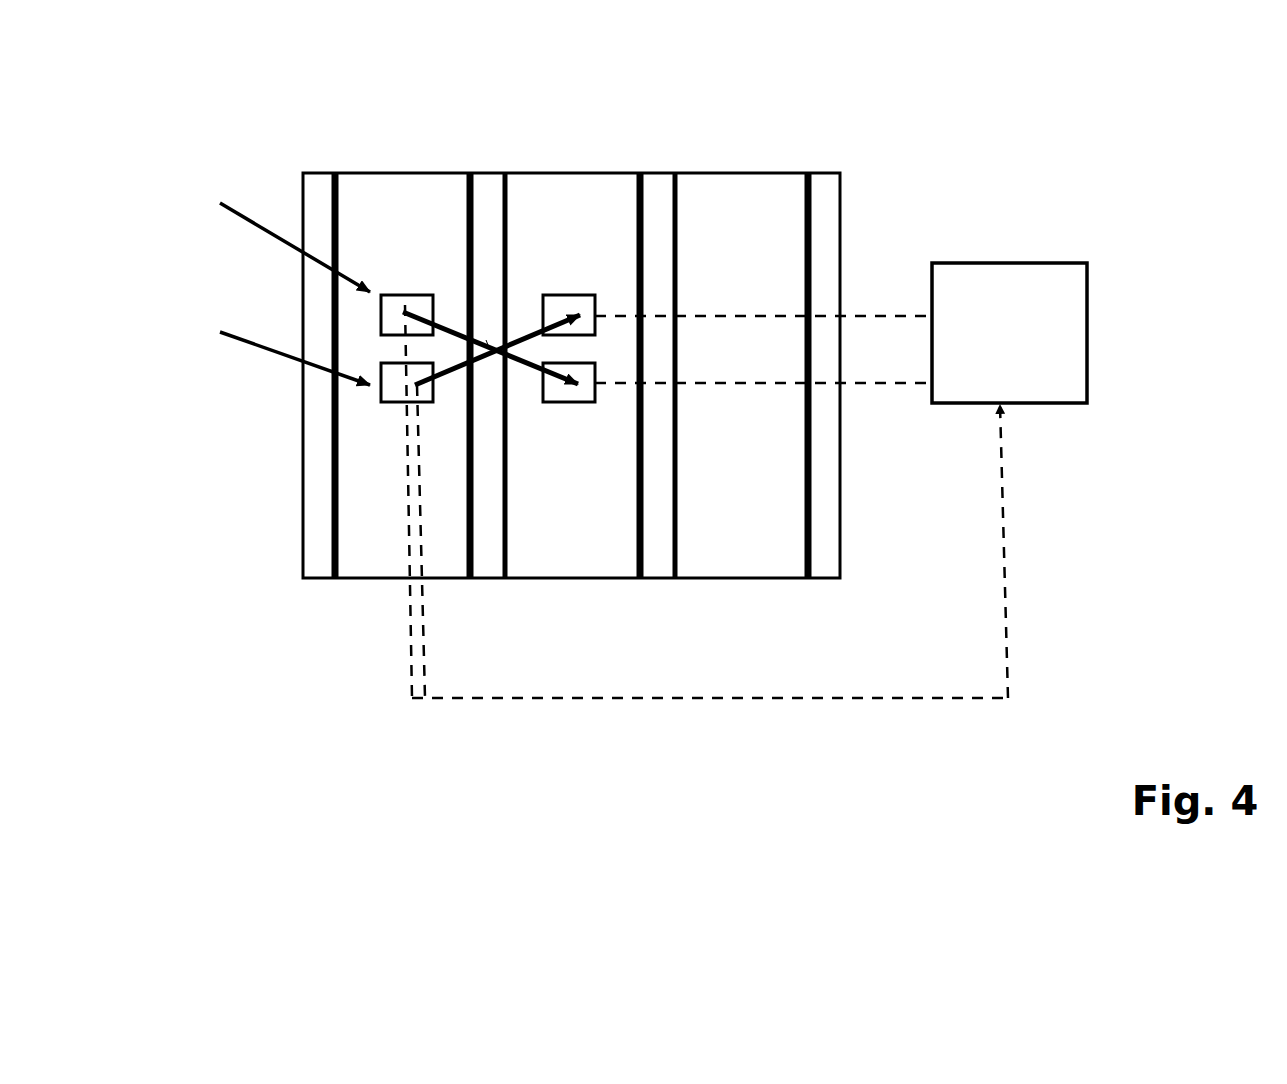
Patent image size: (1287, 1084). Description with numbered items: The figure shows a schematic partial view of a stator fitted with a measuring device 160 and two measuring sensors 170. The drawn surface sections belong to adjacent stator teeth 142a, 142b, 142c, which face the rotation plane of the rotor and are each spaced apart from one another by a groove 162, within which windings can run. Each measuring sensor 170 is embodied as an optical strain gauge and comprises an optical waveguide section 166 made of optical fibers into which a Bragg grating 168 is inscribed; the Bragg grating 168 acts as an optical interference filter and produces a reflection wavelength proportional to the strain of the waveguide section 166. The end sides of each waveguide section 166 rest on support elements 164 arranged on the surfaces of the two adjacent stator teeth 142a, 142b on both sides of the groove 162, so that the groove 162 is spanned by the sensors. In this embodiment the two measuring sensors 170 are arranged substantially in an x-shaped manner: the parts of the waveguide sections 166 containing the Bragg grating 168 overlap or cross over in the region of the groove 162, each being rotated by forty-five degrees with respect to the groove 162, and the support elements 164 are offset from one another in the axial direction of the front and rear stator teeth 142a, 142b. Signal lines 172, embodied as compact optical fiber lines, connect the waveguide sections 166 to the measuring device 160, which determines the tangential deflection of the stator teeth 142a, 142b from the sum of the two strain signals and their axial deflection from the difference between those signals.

The stator tooth 142a is at (417, 203).
The stator tooth 142b is at (596, 203).
The stator tooth 142c is at (757, 203).
The measuring device 160 is at (1040, 293).
The groove 162 is at (318, 203).
The support element 164 is at (390, 307).
The optical waveguide section 166 is at (443, 345).
The Bragg grating 168 is at (482, 335).
The measuring sensor 170 is at (257, 277).
The signal line 172 is at (890, 316).